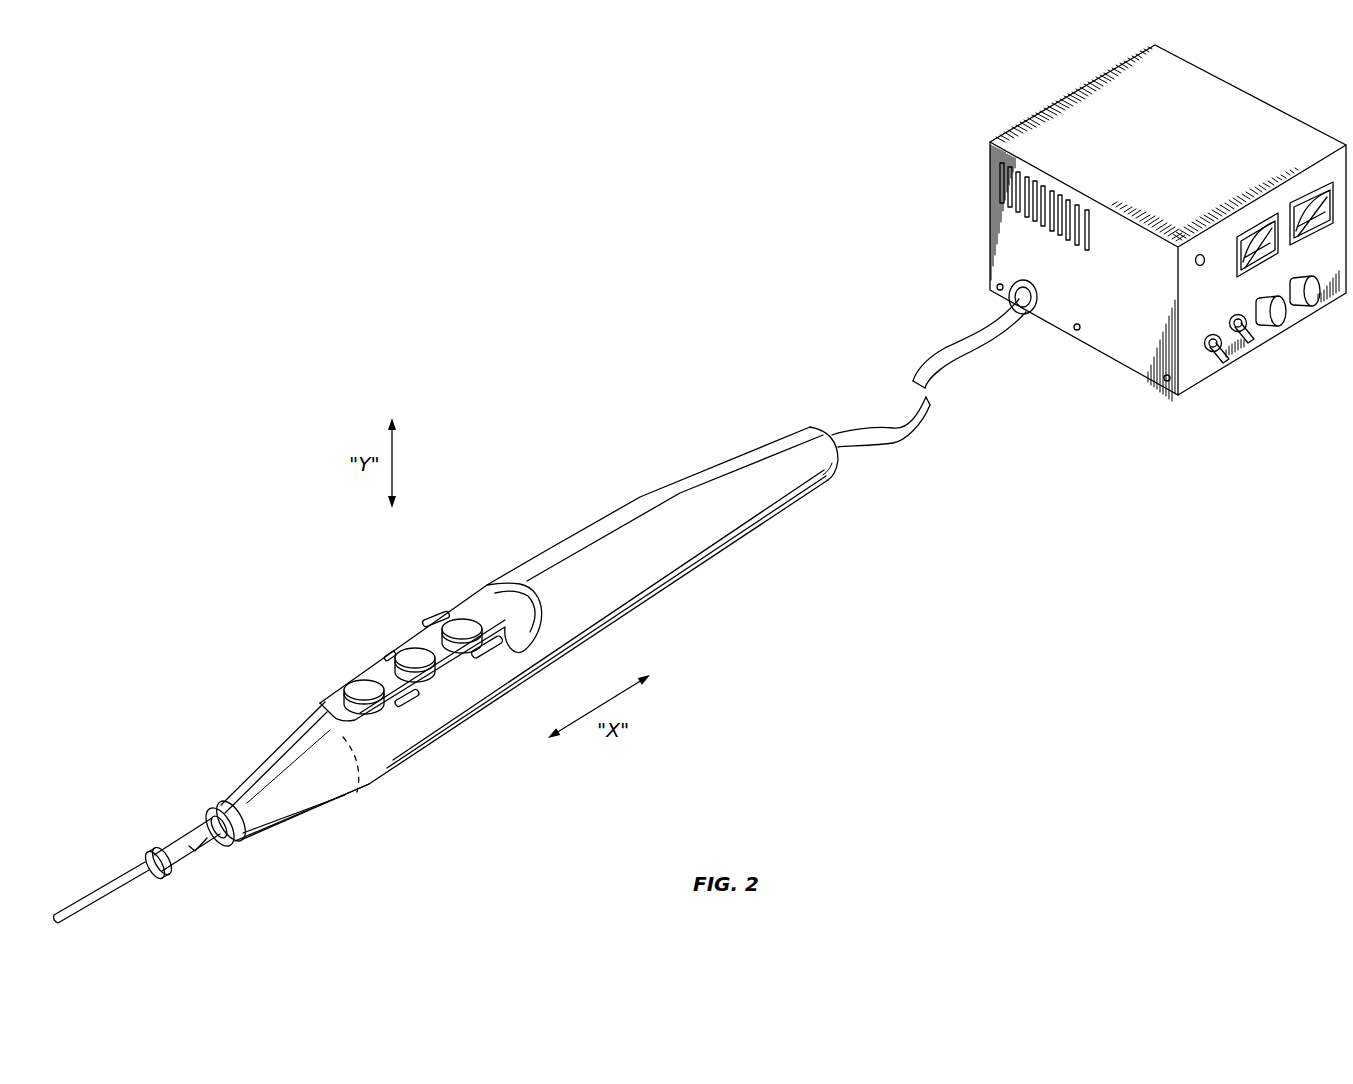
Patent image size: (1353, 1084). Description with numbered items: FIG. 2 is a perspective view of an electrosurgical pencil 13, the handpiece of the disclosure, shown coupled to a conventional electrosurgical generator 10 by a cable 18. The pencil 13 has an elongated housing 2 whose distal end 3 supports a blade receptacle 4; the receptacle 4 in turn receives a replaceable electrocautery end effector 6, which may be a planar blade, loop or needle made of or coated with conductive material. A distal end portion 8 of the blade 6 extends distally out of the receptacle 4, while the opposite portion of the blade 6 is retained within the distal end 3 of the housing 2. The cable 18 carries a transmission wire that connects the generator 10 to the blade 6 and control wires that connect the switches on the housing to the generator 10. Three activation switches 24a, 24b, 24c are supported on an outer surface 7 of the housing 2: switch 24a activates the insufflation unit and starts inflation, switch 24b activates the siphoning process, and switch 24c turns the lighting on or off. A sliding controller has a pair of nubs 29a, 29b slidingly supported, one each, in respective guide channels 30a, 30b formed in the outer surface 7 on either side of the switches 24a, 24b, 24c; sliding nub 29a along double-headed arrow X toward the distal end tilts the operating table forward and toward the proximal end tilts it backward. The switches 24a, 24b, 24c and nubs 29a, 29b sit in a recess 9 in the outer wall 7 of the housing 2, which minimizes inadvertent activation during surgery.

The elongated housing 2 is at (536, 634).
The distal end 3 is at (244, 773).
The blade receptacle 4 is at (185, 831).
The electrocautery end effector 6 is at (174, 884).
The outer surface 7 is at (616, 598).
The distal end portion 8 is at (56, 923).
The recess 9 is at (515, 613).
The electrosurgical generator 10 is at (1262, 333).
The electrosurgical pencil 13 is at (446, 686).
The cable 18 is at (916, 373).
The activation switch 24a is at (328, 685).
The activation switch 24b is at (380, 644).
The activation switch 24c is at (432, 598).
The nub 29a is at (515, 589).
The nub 29b is at (397, 599).
The guide channel 30a is at (420, 690).
The guide channel 30b is at (388, 657).